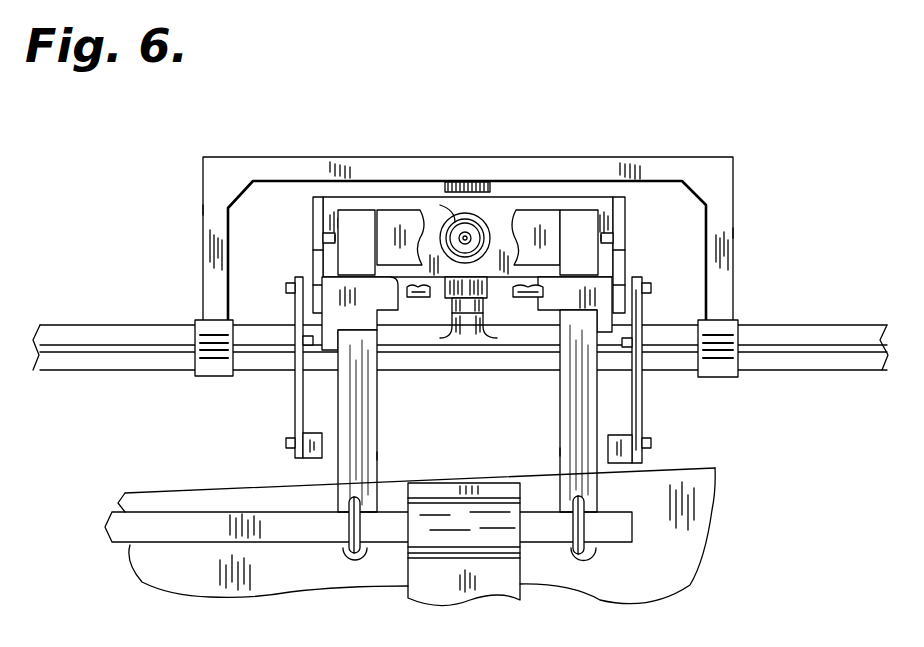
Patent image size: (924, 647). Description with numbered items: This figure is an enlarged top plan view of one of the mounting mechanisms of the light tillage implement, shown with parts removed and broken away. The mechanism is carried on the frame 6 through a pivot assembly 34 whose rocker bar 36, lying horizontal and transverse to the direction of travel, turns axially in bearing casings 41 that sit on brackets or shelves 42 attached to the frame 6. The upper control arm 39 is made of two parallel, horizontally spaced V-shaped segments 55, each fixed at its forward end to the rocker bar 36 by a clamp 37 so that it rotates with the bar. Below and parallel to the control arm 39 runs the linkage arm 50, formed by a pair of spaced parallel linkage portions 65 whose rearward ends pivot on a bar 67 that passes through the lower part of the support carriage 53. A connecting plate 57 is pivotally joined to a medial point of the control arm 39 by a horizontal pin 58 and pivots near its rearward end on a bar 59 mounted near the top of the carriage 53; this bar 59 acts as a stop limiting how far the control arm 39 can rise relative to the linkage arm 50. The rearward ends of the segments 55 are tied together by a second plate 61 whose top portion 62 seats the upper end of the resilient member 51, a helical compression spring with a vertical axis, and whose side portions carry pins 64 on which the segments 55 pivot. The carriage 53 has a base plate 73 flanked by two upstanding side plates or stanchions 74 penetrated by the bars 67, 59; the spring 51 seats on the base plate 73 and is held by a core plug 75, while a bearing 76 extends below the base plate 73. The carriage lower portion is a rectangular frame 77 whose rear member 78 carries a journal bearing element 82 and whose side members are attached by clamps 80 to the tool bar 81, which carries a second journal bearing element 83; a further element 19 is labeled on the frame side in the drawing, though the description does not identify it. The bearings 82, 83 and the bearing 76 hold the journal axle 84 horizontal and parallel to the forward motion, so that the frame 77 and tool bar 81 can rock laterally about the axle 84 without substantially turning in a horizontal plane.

The frame 6 is at (688, 560).
The frame leg 19 is at (203, 210).
The pivot assembly 34 is at (393, 545).
The rocker bar 36 is at (202, 518).
The clamp 37 is at (342, 548).
The control arm 39 is at (560, 447).
The bearing casing 41 is at (505, 537).
The bracket or shelf 42 is at (425, 583).
The linkage arm 50 is at (640, 393).
The resilient member 51 is at (440, 226).
The support carriage 53 is at (583, 200).
The segment 55 is at (340, 414).
The connecting arm or plate 57 is at (322, 318).
The horizontal pin 58 is at (303, 340).
The bar 59 is at (410, 292).
The second plate 61 is at (530, 217).
The top portion 62 is at (557, 217).
The pin 64 is at (333, 237).
The linkage portion 65 is at (296, 433).
The bar 67 is at (425, 292).
The base plate 73 is at (503, 207).
The side plate or stanchion 74 is at (318, 210).
The core plug 75 is at (447, 222).
The bearing 76 is at (463, 282).
The rectangular frame 77 is at (305, 162).
The rear member 78 is at (660, 165).
The clamp 80 is at (197, 320).
The tool bar 81 is at (826, 332).
The journal bearing element 82 is at (460, 181).
The second journal bearing element 83 is at (470, 330).
The journal axle 84 is at (485, 304).